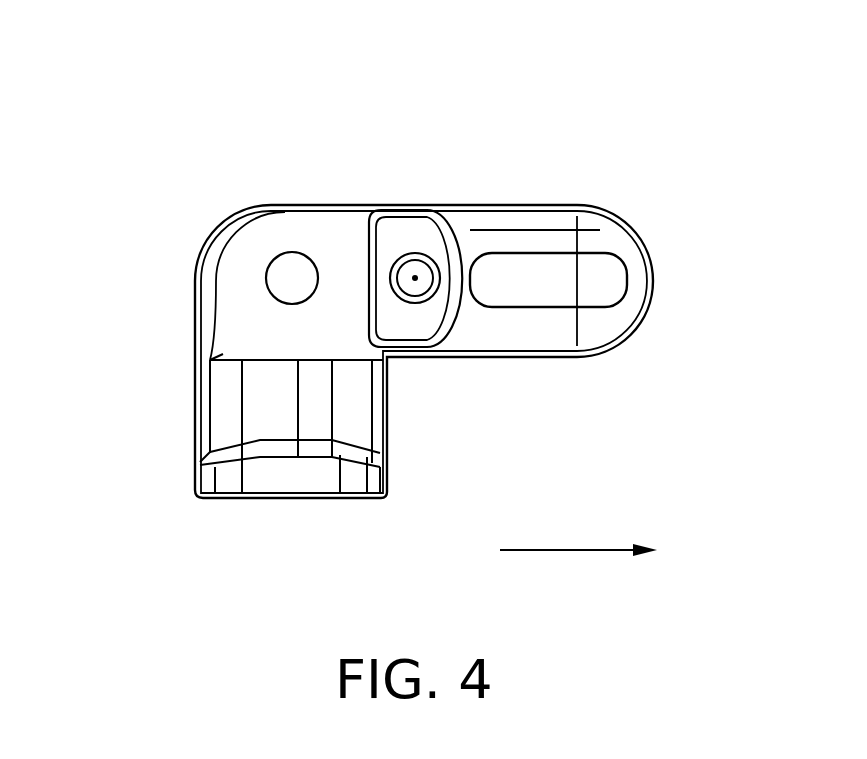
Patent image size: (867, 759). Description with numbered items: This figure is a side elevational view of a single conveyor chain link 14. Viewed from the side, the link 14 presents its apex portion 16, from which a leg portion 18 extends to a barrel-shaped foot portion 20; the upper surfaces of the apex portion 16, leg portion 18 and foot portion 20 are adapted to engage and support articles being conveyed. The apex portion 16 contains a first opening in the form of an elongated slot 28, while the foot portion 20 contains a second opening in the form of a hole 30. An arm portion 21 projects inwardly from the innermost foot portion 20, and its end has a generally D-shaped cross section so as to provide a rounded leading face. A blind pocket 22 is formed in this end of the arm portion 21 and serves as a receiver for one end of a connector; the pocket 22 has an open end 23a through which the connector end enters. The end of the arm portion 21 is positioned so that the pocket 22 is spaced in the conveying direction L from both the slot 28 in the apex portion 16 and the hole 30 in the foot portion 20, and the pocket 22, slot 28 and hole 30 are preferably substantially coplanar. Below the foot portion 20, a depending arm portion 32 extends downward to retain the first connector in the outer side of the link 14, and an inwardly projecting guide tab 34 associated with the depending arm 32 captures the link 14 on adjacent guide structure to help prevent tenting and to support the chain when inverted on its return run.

The link 14 is at (228, 224).
The apex portion 16 is at (632, 300).
The leg portion 18 is at (528, 235).
The foot portion 20 is at (245, 280).
The arm portion 21 is at (382, 210).
The pocket 22 is at (426, 268).
The open end 23a is at (415, 280).
The elongated slot 28 is at (527, 307).
The hole 30 is at (293, 251).
The depending arm portion 32 is at (220, 407).
The guide tab 34 is at (308, 482).
The conveying direction L is at (558, 550).